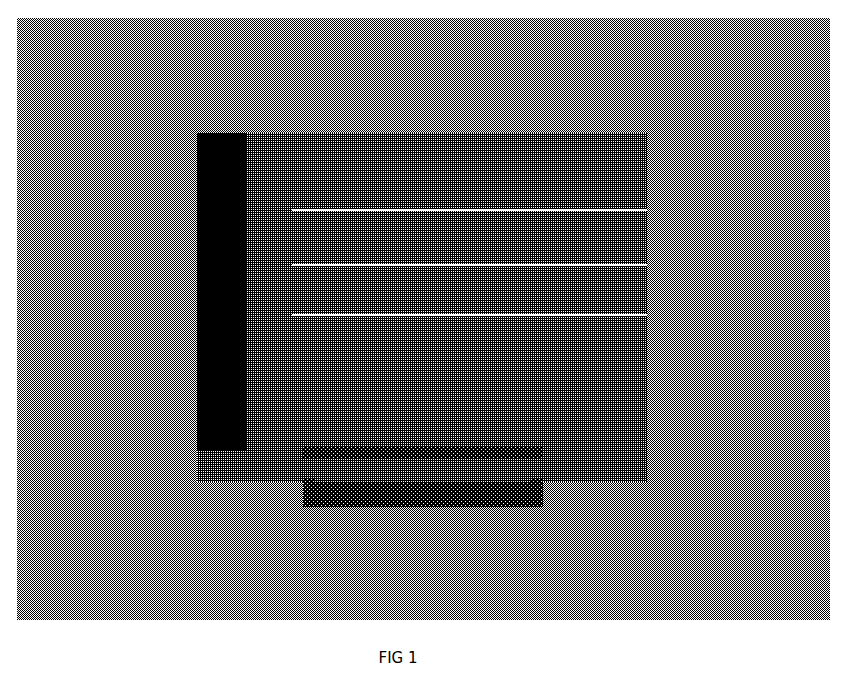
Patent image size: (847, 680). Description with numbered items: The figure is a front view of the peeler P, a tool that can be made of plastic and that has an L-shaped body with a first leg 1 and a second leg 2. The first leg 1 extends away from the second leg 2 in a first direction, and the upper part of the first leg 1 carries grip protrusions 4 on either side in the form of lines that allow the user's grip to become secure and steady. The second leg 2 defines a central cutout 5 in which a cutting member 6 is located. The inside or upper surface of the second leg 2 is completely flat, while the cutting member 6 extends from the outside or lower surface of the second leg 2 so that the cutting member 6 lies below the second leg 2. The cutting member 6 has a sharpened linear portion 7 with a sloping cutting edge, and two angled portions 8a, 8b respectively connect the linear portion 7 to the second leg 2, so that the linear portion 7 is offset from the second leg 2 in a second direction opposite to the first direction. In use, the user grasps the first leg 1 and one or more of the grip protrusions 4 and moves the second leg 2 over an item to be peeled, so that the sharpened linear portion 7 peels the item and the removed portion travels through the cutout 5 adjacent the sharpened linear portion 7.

The first leg 1 is at (630, 262).
The second leg 2 is at (641, 458).
The grip protrusions 4 is at (292, 308).
The central cutout 5 is at (362, 457).
The cutting member 6 is at (466, 528).
The sharpened linear portion 7 is at (363, 496).
The angled portion 8a is at (302, 482).
The angled portion 8b is at (535, 477).
The peeler P is at (660, 150).